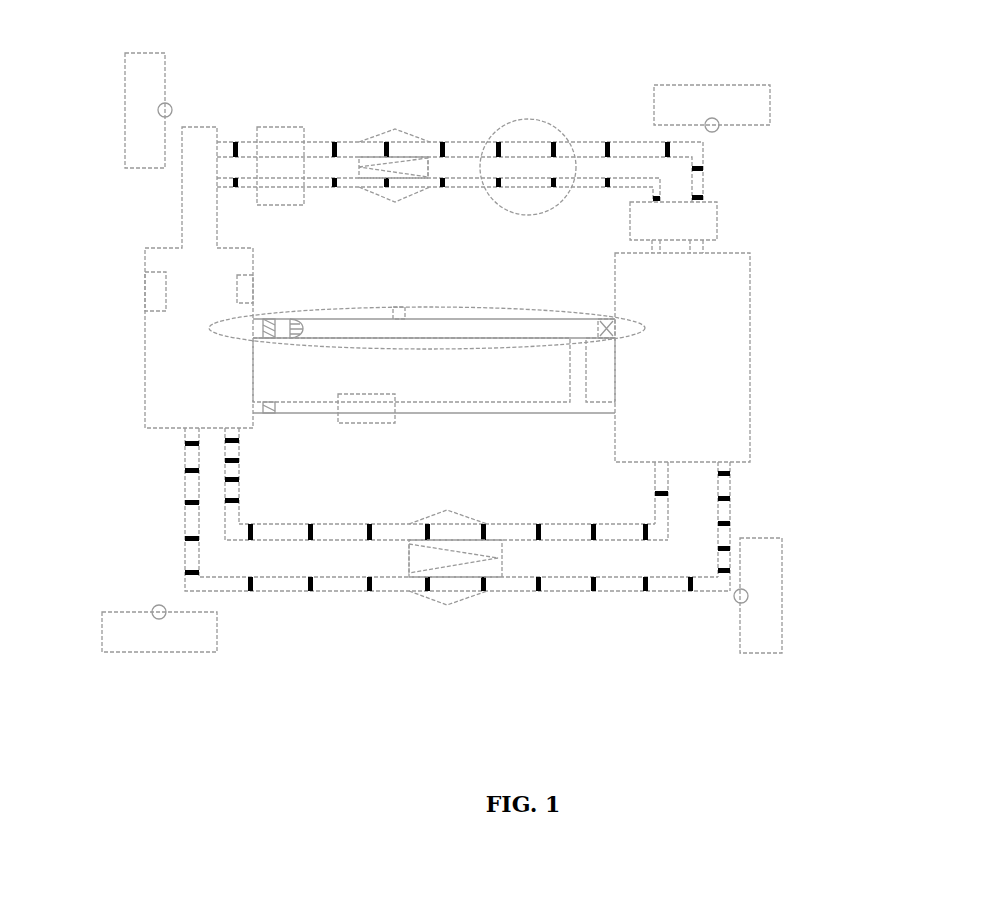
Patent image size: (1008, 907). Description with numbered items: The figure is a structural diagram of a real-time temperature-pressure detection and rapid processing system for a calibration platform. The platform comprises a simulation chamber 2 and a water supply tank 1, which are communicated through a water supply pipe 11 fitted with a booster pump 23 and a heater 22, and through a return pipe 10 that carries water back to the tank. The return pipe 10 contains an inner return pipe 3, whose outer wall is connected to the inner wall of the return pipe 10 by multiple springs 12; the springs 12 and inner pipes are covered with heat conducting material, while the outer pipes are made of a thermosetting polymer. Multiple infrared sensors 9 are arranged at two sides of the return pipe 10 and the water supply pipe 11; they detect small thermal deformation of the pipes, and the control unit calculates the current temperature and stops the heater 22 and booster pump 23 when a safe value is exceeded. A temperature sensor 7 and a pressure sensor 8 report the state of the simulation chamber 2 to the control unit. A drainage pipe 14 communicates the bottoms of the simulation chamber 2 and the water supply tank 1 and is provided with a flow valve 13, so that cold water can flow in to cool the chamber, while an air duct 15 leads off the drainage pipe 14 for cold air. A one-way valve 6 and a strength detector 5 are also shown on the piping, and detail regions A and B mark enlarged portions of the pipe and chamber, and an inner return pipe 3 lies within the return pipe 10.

The water supply tank 1 is at (727, 378).
The simulation chamber 2 is at (192, 357).
The inner return pipe 3 is at (568, 557).
The strength detector 5 is at (445, 517).
The one-way valve 6 is at (397, 157).
The temperature sensor 7 is at (247, 290).
The pressure sensor 8 is at (155, 290).
The infrared sensor 9 is at (763, 605).
The return pipe 10 is at (348, 583).
The water supply pipe 11 is at (468, 138).
The spring 12 is at (367, 408).
The flow valve 13 is at (445, 415).
The drainage pipe 14 is at (522, 407).
The air duct 15 is at (579, 385).
The heater 22 is at (280, 167).
The booster pump 23 is at (675, 223).
The detail region A is at (548, 120).
The detail region B is at (485, 303).